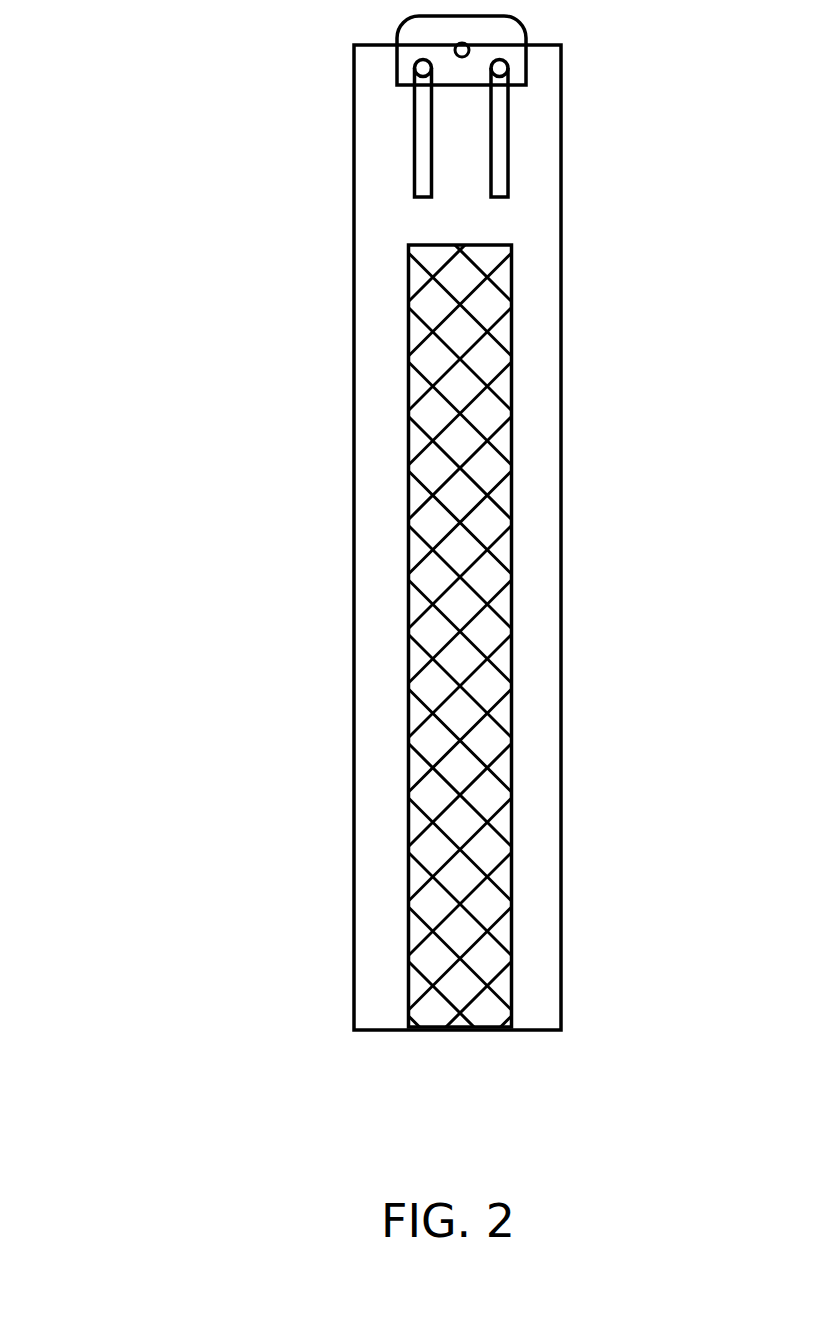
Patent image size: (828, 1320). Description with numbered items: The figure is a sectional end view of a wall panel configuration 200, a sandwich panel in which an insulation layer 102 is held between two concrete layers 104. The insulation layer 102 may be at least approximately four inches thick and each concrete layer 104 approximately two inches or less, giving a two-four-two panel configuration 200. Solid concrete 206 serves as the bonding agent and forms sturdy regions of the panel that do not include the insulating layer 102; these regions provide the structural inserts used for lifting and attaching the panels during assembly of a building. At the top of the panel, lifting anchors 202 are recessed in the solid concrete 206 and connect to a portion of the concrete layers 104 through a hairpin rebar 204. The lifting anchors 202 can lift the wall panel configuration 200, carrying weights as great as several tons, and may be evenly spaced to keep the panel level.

The wall panel configuration 200 is at (177, 53).
The insulation layer 102 is at (430, 792).
The concrete layer 104 is at (362, 623).
The lifting anchor 202 is at (527, 27).
The hairpin rebar 204 is at (413, 172).
The solid concrete 206 is at (540, 173).